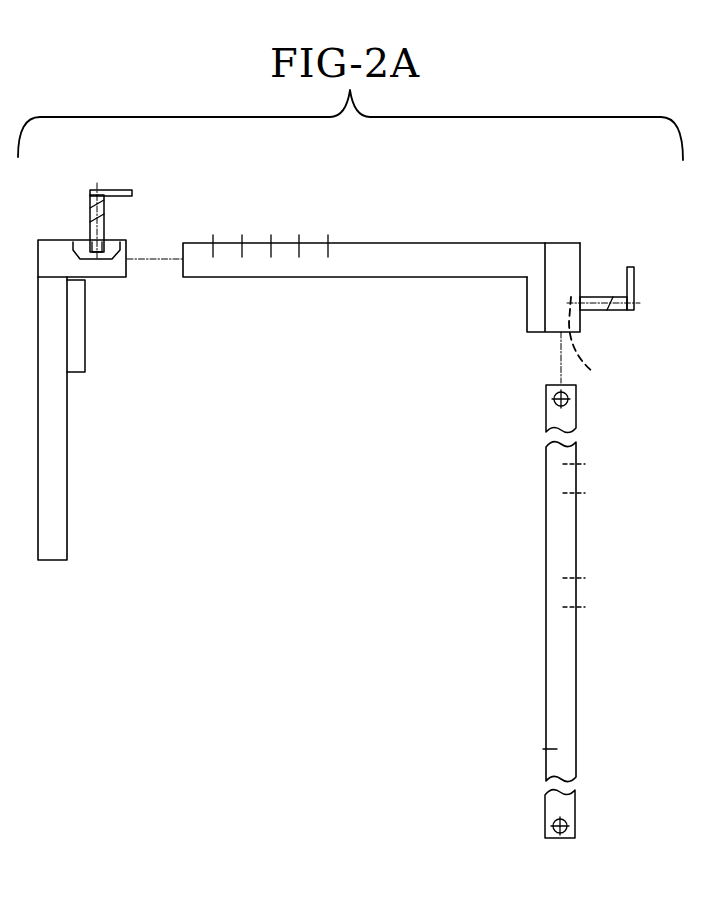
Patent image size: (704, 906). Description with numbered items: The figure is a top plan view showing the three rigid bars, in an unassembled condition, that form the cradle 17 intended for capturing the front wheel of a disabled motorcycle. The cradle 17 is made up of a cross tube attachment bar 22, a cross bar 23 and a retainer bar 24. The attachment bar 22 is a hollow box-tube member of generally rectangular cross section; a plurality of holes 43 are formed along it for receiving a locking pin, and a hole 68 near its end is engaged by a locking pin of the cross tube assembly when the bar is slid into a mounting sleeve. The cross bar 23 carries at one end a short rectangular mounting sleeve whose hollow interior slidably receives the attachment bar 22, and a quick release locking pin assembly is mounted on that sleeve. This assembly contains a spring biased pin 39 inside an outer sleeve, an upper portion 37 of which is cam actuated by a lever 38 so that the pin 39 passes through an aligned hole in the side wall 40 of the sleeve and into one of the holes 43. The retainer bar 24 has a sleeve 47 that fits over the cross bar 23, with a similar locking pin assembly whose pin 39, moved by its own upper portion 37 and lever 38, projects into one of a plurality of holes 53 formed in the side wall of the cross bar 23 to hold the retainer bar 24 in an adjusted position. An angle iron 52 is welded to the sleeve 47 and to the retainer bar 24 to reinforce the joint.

The cradle 17 is at (437, 395).
The cross tube attachment bar 22 is at (577, 522).
The cross bar 23 is at (396, 245).
The retainer bar 24 is at (55, 457).
The upper portion 37 is at (102, 208).
The lever 38 is at (117, 192).
The spring biased pin 39 is at (120, 255).
The side wall 40 is at (583, 258).
The holes 43 is at (577, 465).
The sleeve 47 is at (90, 267).
The angle iron 52 is at (75, 348).
The holes 53 is at (298, 243).
The hole 68 is at (545, 749).